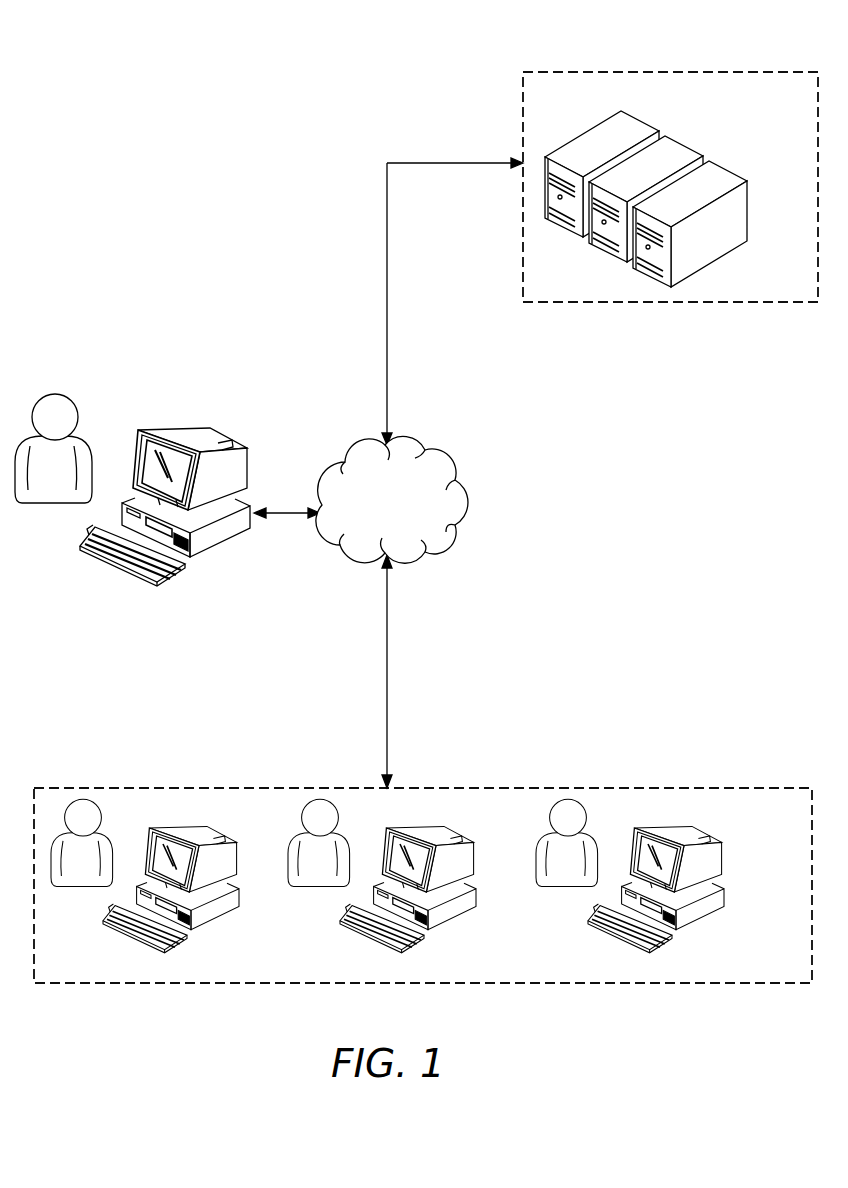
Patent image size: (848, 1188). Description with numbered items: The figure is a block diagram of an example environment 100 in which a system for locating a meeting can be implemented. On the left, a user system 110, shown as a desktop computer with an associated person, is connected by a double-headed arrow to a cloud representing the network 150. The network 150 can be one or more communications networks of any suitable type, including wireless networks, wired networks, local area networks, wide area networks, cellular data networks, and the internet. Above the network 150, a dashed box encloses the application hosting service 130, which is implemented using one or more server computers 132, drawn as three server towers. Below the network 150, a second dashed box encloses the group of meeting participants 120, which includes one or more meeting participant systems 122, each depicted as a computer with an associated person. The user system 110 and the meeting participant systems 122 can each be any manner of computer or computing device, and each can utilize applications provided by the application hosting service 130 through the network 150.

The environment 100 is at (213, 55).
The user system 110 is at (226, 446).
The group of meeting participants 120 is at (644, 788).
The meeting participant system 122 is at (215, 838).
The application hosting service 130 is at (699, 71).
The server computer 132 is at (588, 128).
The network 150 is at (436, 448).